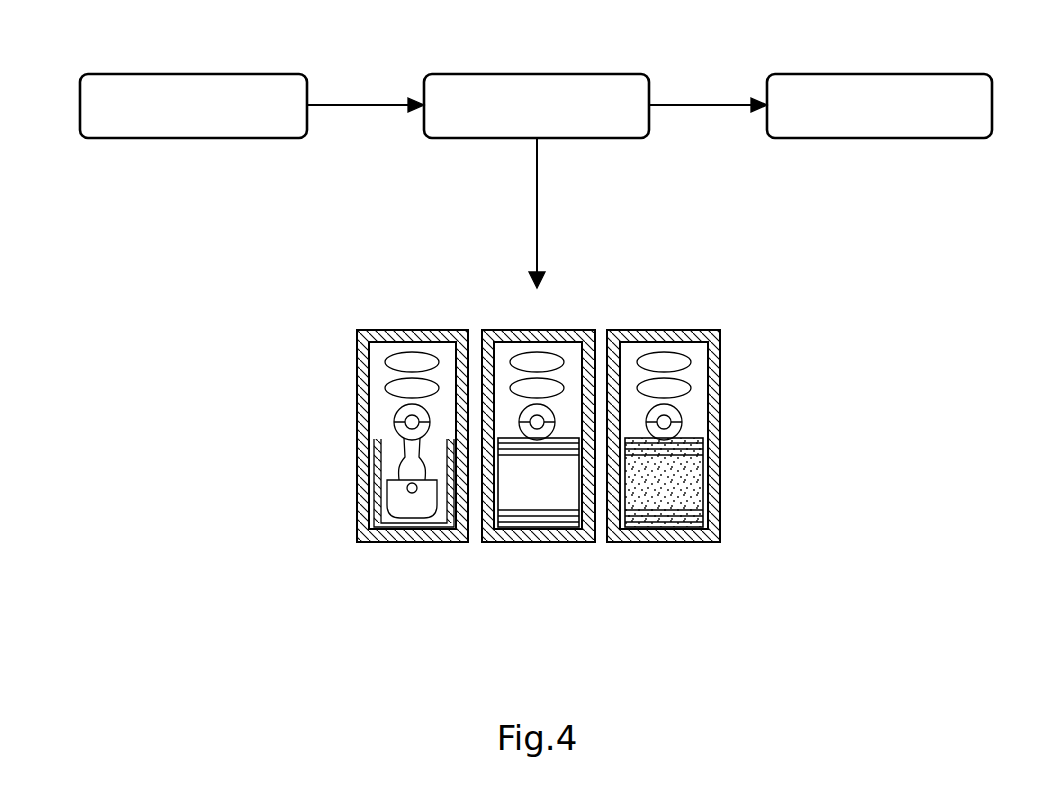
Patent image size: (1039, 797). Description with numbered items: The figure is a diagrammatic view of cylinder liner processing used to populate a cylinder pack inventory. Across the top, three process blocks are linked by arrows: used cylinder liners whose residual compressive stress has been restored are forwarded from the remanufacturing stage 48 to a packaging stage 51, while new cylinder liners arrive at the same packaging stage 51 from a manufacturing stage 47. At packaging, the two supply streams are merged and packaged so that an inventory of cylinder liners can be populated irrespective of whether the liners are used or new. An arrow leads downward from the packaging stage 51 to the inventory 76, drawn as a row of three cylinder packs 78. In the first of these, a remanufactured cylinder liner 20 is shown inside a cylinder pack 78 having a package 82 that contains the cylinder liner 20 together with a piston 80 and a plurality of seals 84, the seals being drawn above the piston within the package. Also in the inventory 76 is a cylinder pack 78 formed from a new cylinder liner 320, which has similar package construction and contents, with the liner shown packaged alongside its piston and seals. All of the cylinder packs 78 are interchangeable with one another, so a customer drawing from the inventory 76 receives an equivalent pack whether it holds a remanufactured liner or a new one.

The remanufacturing stage 48 is at (185, 74).
The packaging stage 51 is at (530, 74).
The manufacturing stage 47 is at (871, 74).
The inventory 76 is at (287, 408).
The seals 84 is at (380, 349).
The package 82 is at (364, 434).
The cylinder liner 20 is at (376, 466).
The piston 80 is at (391, 503).
The cylinder pack 78 is at (385, 536).
The new cylinder liner 320 is at (704, 500).